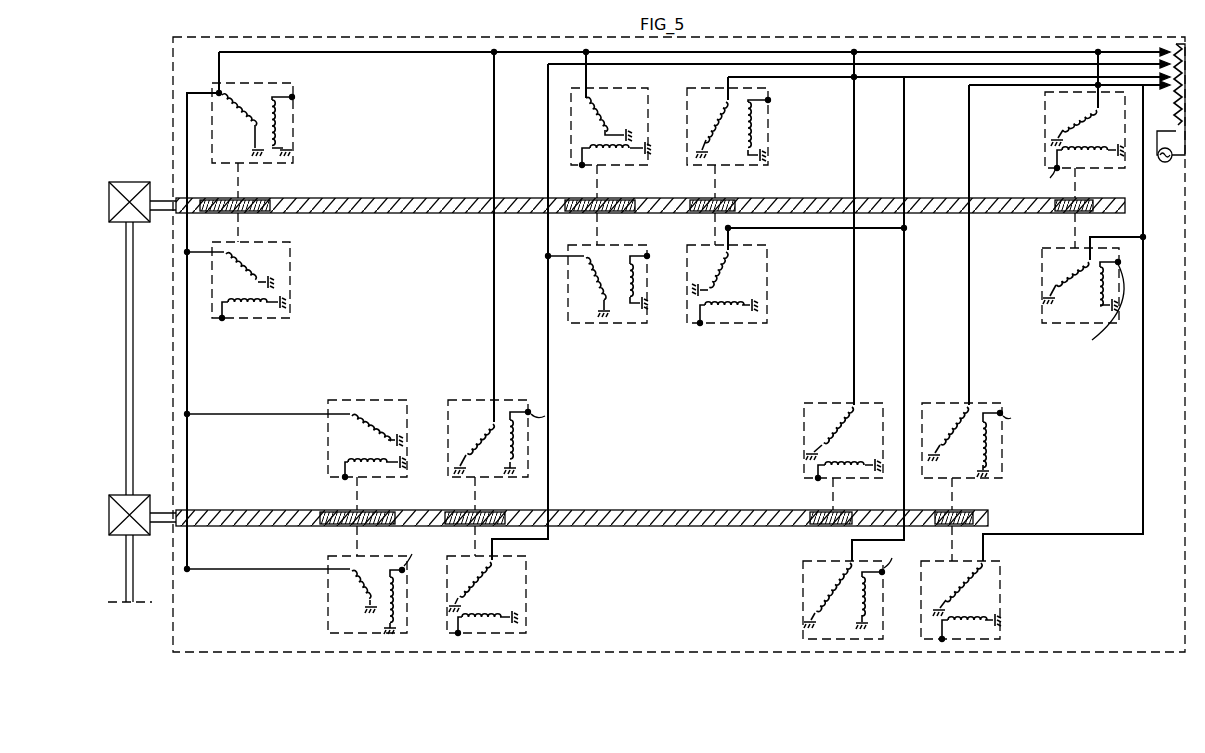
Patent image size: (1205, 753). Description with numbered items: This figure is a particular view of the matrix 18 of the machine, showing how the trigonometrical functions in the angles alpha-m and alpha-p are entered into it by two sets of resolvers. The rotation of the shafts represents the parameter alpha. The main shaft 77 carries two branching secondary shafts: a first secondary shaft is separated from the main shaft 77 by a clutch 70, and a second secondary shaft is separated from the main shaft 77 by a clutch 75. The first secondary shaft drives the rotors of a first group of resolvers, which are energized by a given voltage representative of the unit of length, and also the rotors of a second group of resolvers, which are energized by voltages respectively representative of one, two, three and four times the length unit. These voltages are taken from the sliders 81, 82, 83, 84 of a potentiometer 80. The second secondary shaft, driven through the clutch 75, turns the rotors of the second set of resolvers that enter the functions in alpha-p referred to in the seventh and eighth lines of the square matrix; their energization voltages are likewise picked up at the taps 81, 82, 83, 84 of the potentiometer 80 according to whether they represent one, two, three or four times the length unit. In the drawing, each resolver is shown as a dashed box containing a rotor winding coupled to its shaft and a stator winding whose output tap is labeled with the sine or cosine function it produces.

The matrix 18 is at (178, 60).
The clutch 70 is at (136, 182).
The clutch 75 is at (138, 495).
The main shaft 77 is at (126, 602).
The potentiometer 80 is at (1172, 120).
The slider 81 is at (1184, 88).
The slider 82 is at (1152, 50).
The slider 83 is at (1150, 83).
The slider 84 is at (1170, 88).